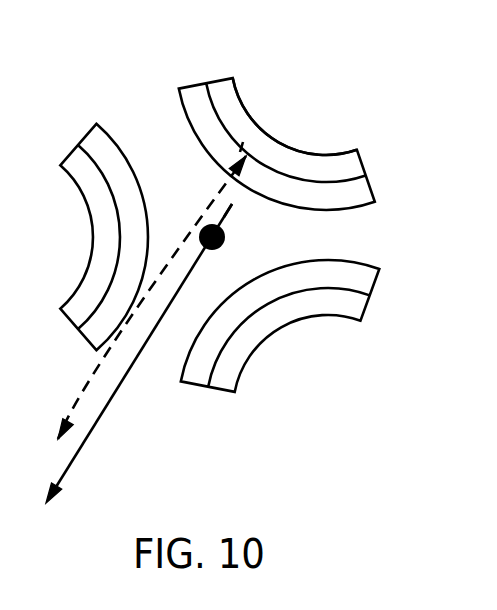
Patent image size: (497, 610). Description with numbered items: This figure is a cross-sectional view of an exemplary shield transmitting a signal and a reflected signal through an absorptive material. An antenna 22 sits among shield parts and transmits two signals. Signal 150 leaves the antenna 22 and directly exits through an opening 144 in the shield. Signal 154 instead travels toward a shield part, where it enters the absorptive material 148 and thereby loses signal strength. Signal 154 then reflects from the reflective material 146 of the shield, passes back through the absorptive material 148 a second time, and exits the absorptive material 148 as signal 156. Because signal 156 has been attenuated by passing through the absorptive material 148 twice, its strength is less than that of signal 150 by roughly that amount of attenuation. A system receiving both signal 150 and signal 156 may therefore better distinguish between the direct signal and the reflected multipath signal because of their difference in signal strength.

The antenna 22 is at (224, 240).
The opening 144 is at (148, 397).
The reflective material 146 is at (240, 95).
The absorptive material 148 is at (191, 85).
The signal 150 is at (104, 407).
The signal 154 is at (231, 199).
The signal 156 is at (82, 402).